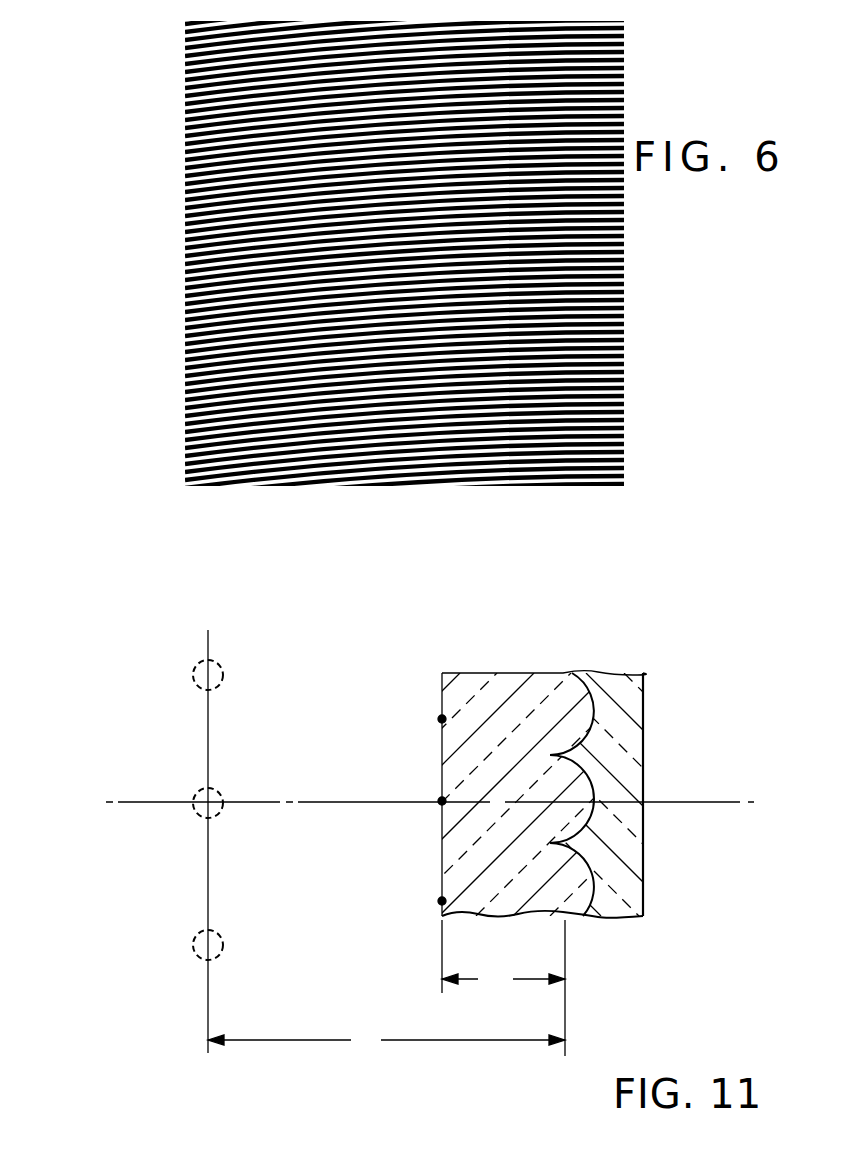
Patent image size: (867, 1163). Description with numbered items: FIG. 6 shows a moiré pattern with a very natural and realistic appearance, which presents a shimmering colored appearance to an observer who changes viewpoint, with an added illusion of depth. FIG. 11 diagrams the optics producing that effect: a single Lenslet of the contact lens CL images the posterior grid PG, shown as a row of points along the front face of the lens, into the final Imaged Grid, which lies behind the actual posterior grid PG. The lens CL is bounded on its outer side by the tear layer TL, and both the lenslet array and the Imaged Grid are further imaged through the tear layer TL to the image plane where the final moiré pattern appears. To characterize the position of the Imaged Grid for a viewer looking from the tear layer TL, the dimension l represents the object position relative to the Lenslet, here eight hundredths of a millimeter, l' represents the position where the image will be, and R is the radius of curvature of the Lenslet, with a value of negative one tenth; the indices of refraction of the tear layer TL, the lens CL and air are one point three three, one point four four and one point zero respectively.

The posterior grid PG is at (434, 793).
The radius of curvature of the lenslet R is at (572, 761).
The lenslet Lenslet is at (578, 764).
The contact lens CL is at (464, 794).
The tear layer TL is at (513, 794).
The imaged grid Imaged Grid is at (193, 808).
The object position relative to the lenslet l is at (503, 980).
The image position l' is at (386, 1045).